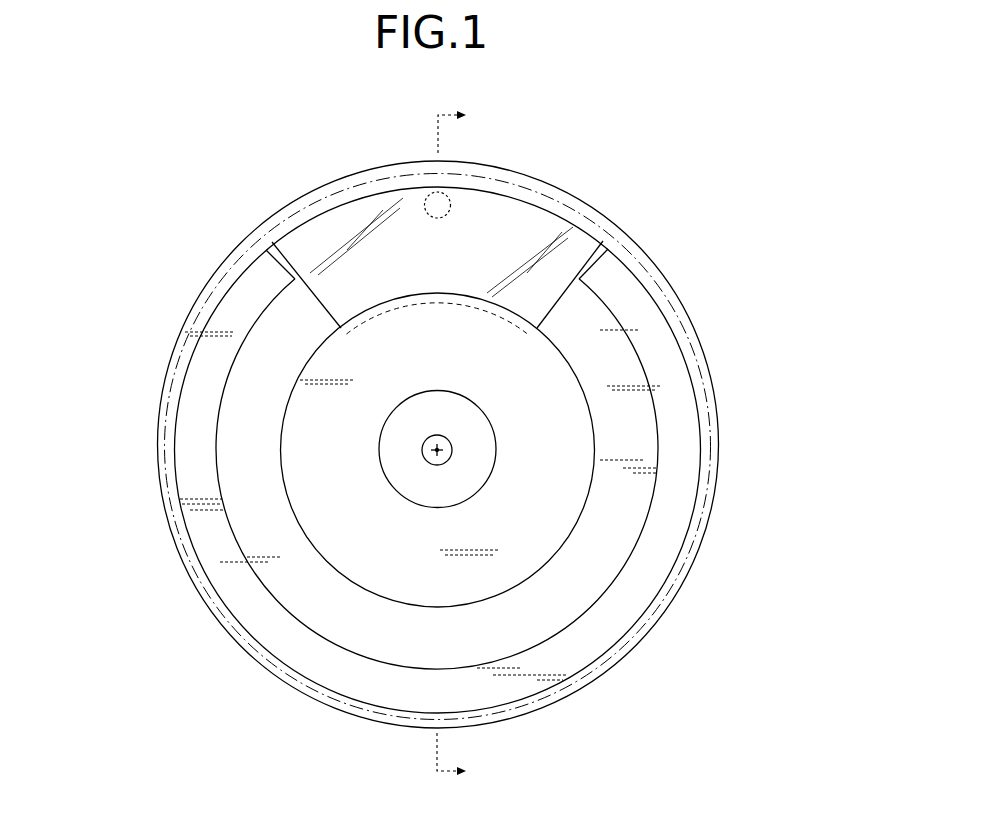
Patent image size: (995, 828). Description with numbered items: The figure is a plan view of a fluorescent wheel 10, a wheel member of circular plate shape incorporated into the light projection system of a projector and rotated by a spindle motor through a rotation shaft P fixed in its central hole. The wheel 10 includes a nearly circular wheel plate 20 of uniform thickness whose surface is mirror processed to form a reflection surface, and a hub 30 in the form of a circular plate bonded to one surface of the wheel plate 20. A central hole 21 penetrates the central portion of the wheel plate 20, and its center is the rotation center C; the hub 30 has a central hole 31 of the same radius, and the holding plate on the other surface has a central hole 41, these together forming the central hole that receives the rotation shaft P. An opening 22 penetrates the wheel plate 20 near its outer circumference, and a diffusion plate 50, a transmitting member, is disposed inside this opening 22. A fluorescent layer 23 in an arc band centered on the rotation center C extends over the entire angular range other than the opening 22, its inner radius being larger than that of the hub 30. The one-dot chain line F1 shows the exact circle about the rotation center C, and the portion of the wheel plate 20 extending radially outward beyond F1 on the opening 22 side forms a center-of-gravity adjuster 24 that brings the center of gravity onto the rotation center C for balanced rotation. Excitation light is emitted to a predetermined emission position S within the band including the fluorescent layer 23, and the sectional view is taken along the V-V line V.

The fluorescent wheel 10 is at (769, 139).
The wheel plate 20 is at (595, 686).
The central hole 21 is at (388, 466).
The opening 22 is at (546, 212).
The fluorescent layer 23 is at (203, 443).
The center-of-gravity adjuster 24 is at (347, 182).
The hub 30 is at (590, 393).
The central hole 31 is at (437, 450).
The central hole 41 is at (437, 450).
The diffusion plate 50 is at (305, 235).
The emission position S is at (423, 198).
The rotation center C is at (447, 453).
The rotation shaft P is at (404, 497).
The one-dot chain line F1 is at (660, 273).
The V-V line V is at (459, 444).